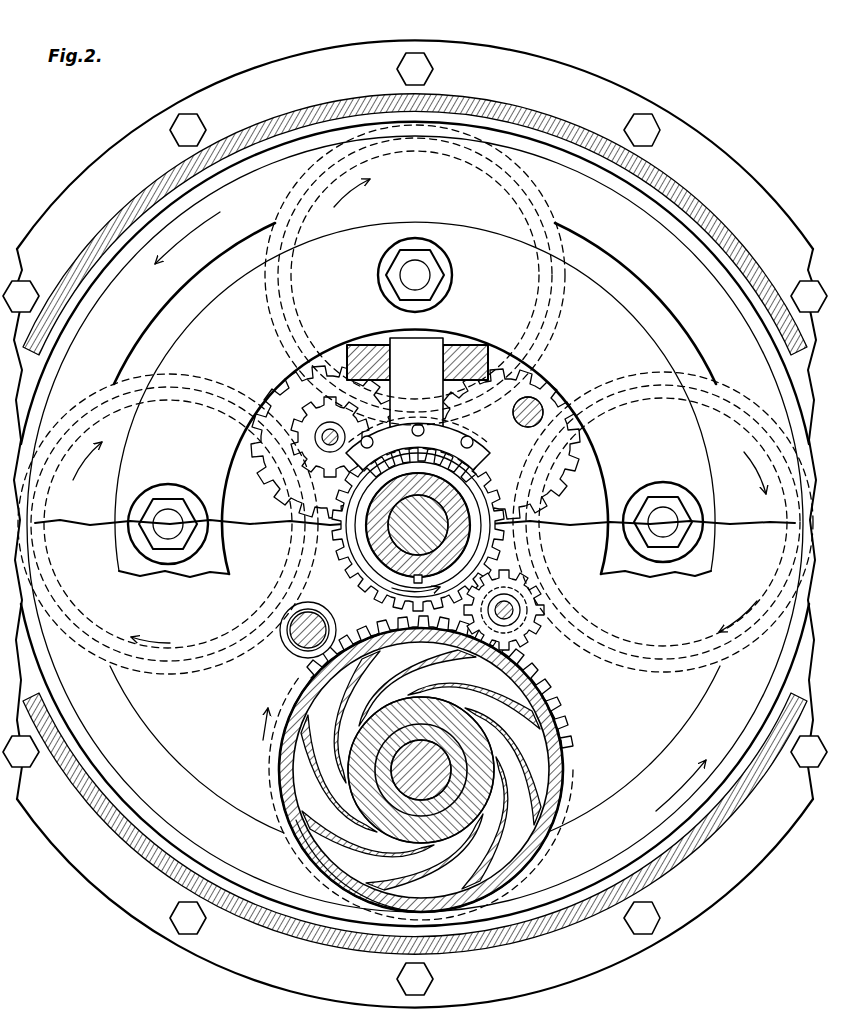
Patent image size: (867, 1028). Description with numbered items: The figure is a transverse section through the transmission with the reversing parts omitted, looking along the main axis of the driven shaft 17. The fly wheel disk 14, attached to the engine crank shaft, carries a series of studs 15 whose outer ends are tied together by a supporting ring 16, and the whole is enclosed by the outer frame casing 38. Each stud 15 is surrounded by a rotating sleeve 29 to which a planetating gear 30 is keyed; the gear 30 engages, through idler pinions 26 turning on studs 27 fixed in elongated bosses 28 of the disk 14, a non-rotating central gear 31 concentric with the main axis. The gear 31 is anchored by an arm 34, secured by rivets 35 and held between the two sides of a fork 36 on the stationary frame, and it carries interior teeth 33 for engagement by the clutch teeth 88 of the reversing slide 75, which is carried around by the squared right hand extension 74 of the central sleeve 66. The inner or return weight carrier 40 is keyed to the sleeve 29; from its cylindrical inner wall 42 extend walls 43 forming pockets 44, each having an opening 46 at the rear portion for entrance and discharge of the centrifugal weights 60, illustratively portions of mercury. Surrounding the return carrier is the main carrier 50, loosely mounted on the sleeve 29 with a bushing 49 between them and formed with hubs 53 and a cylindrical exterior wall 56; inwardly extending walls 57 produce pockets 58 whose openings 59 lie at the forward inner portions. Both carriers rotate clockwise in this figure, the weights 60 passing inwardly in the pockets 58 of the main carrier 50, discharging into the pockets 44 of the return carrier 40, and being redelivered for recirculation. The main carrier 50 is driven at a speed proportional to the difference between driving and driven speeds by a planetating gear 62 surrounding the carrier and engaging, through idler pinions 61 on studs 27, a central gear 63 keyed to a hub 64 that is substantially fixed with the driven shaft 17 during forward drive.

The fly wheel disk 14 is at (415, 524).
The stud 15 is at (424, 276).
The supporting ring 16 is at (419, 411).
The driven shaft 17 is at (400, 535).
The idler pinion 26 is at (540, 400).
The stud 27 is at (508, 606).
The elongated boss 28 is at (295, 620).
The rotating sleeve 29 is at (535, 742).
The planetating gear 30 is at (415, 399).
The central gear 31 is at (507, 508).
The teeth 33 is at (350, 505).
The arm 34 is at (416, 382).
The rivet 35 is at (418, 425).
The fork 36 is at (372, 346).
The outer frame casing 38 is at (706, 842).
The return weight carrier 40 is at (455, 760).
The cylindrical inner wall 42 is at (330, 748).
The wall 43 is at (333, 780).
The pocket 44 is at (330, 798).
The opening 46 is at (333, 837).
The bushing 49 is at (480, 785).
The main carrier 50 is at (592, 832).
The hub 53 is at (517, 837).
The exterior wall 56 is at (507, 867).
The wall 57 is at (463, 900).
The pocket 58 is at (437, 910).
The opening 59 is at (423, 900).
The centrifugal weight 60 is at (383, 890).
The idler pinion 61 is at (302, 410).
The planetating gear 62 is at (538, 680).
The central gear 63 is at (418, 525).
The hub 64 is at (462, 538).
The central sleeve 66 is at (393, 556).
The right hand extension 74 is at (432, 480).
The reversing slide 75 is at (403, 480).
The clutch teeth 88 is at (352, 527).